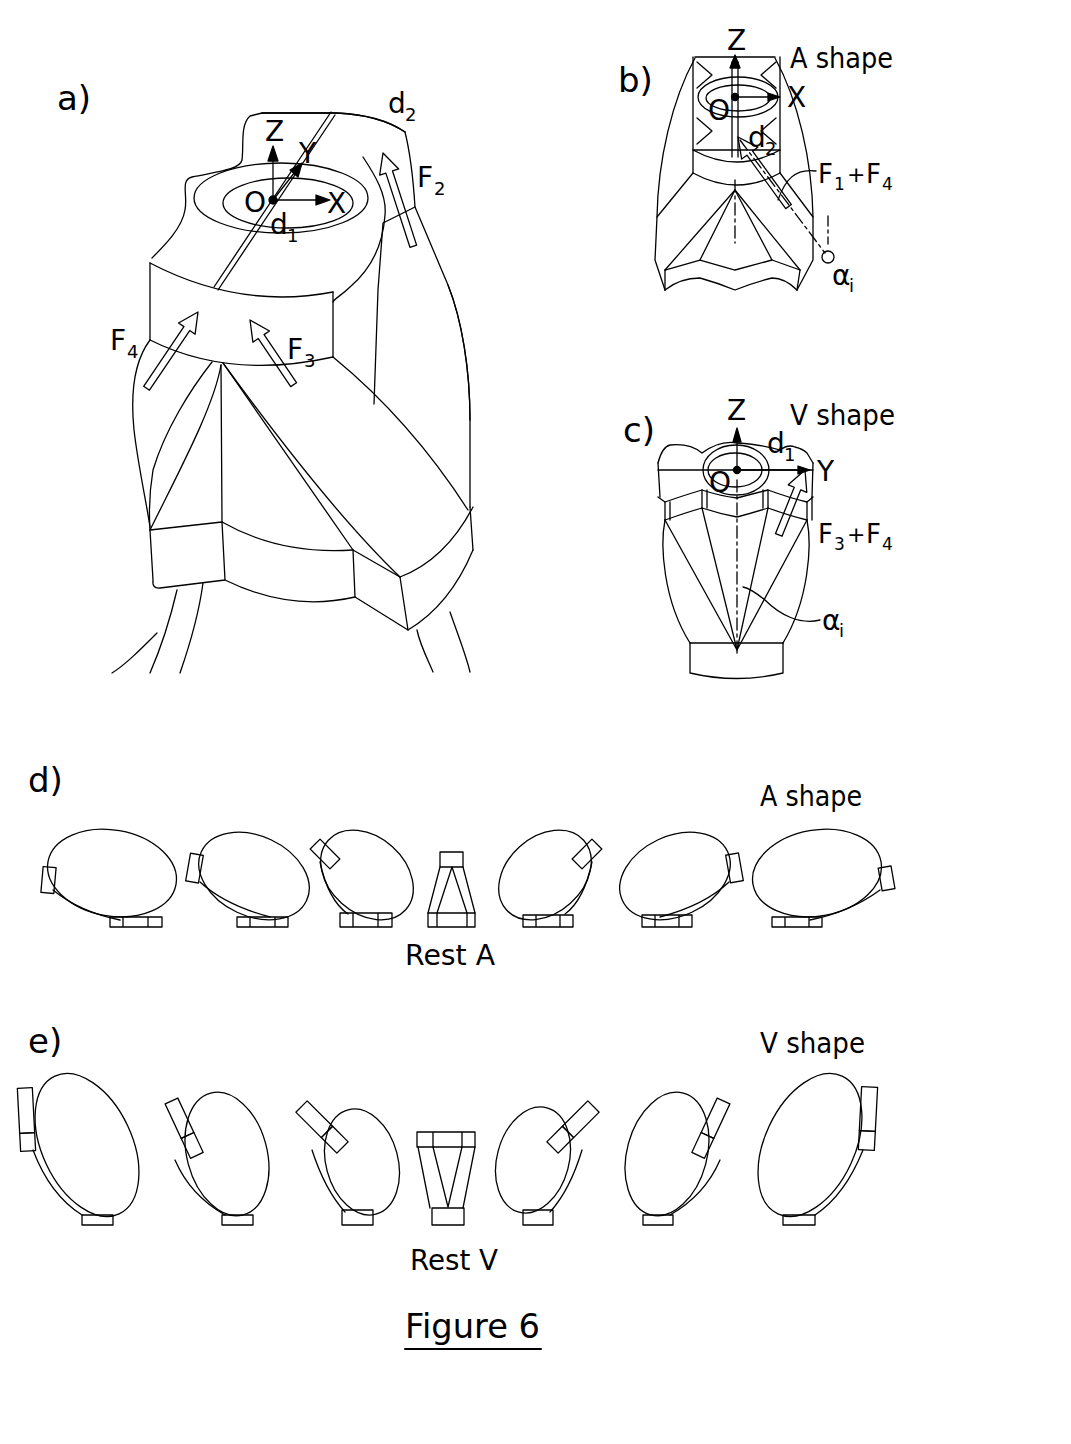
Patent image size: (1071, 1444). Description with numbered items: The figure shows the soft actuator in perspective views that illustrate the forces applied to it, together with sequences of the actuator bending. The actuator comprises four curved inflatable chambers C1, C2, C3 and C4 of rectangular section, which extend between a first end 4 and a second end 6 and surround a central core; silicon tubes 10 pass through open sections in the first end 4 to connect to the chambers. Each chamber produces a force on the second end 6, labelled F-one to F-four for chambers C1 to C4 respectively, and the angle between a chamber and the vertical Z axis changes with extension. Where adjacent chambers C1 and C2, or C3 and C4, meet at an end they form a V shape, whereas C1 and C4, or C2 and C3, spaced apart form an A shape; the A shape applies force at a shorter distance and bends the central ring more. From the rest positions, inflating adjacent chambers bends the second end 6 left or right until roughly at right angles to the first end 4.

The first end 4 is at (310, 575).
The second end 6 is at (173, 260).
The silicon tubes 10 is at (160, 633).
The inflatable chamber C1 is at (282, 110).
The inflatable chamber C2 is at (450, 290).
The inflatable chamber C3 is at (400, 450).
The inflatable chamber C4 is at (150, 417).